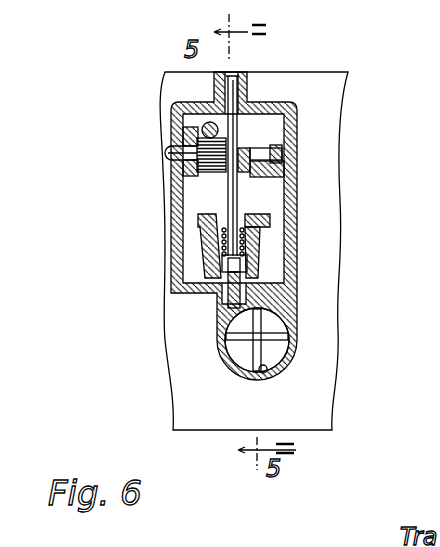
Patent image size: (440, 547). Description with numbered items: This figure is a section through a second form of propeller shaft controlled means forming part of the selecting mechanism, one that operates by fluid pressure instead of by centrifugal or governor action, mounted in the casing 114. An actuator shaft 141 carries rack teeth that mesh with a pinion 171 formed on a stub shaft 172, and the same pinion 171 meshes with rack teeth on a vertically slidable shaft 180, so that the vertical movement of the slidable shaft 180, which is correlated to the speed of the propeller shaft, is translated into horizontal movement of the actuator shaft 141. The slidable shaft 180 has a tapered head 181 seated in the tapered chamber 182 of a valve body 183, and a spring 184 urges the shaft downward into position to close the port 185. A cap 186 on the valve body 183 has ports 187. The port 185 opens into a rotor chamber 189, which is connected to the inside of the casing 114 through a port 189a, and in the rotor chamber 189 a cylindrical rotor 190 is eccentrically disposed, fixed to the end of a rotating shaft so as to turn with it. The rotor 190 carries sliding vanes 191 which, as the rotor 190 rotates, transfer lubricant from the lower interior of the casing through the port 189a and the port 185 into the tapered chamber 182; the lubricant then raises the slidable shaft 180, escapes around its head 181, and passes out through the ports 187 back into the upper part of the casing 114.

The casing 114 is at (330, 364).
The actuator shaft 141 is at (203, 128).
The pinion 171 is at (242, 138).
The stub shaft 172 is at (166, 156).
The slidable shaft 180 is at (236, 188).
The tapered head 181 is at (252, 263).
The tapered chamber 182 is at (262, 245).
The valve body 183 is at (210, 242).
The spring 184 is at (206, 255).
The port 185 is at (228, 293).
The cap 186 is at (266, 220).
The ports 187 is at (224, 216).
The rotor chamber 189 is at (285, 325).
The port 189a is at (268, 373).
The cylindrical rotor 190 is at (247, 348).
The sliding vanes 191 is at (260, 377).